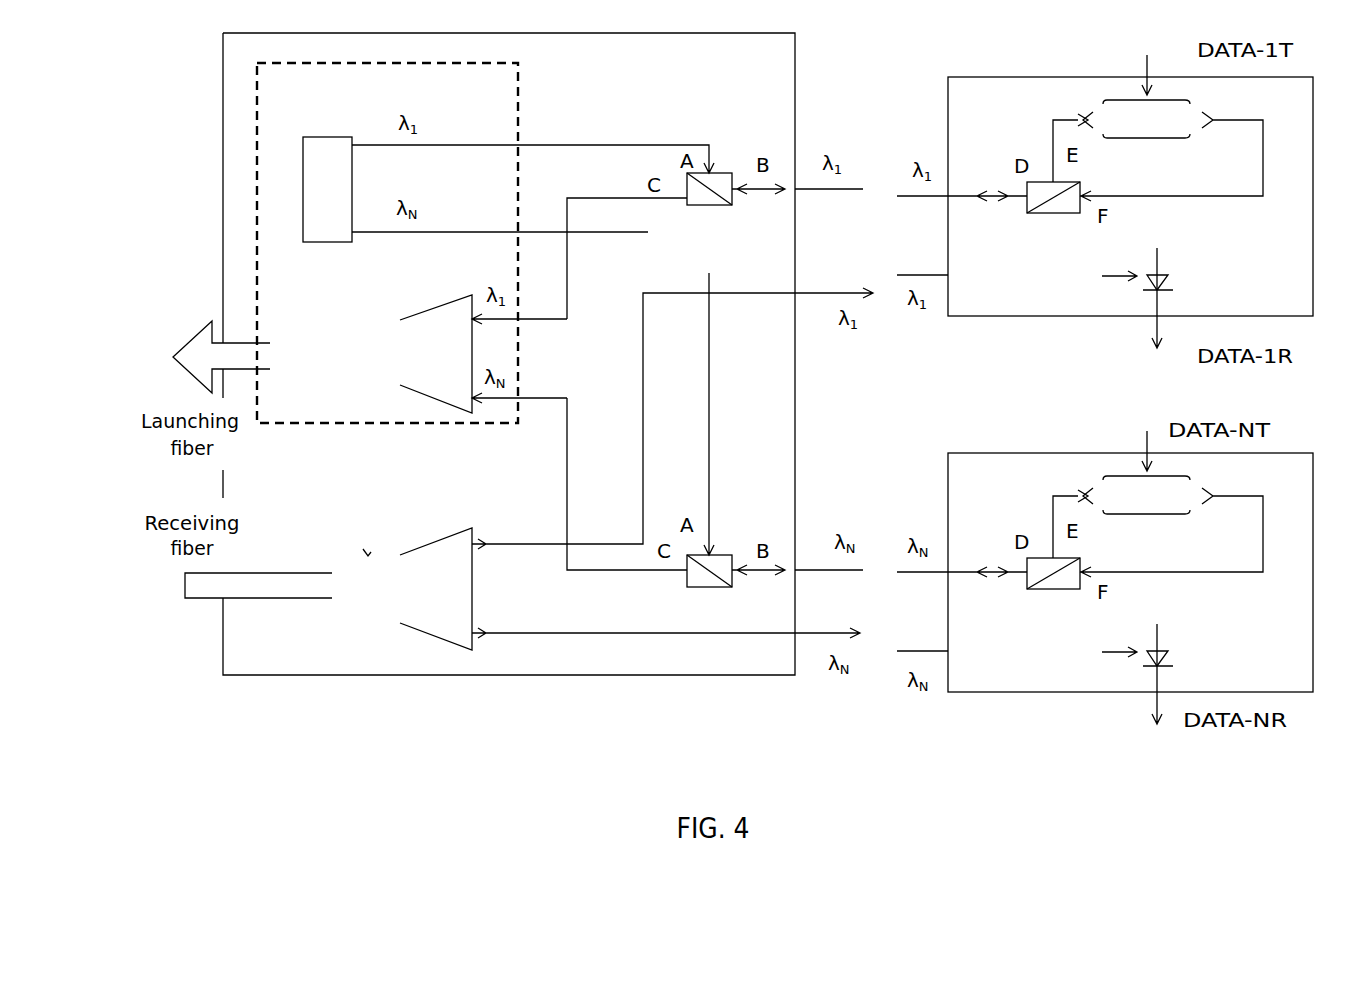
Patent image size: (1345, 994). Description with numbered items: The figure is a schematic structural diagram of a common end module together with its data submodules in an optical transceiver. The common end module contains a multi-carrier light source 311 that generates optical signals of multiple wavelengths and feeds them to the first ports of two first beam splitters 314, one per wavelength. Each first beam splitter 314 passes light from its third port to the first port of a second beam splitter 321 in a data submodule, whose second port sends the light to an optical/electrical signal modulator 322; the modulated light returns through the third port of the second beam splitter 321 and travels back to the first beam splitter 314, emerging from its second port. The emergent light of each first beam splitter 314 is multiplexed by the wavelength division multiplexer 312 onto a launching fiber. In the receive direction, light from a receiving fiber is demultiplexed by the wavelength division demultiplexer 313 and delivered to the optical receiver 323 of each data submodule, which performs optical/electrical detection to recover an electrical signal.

The multi-carrier light source 311 is at (382, 94).
The wavelength division multiplexer 312 is at (434, 303).
The wavelength division demultiplexer 313 is at (460, 534).
The first beam splitter 314 is at (716, 165).
The second beam splitter 321 is at (1079, 182).
The optical/electrical signal modulator 322 is at (1194, 101).
The optical receiver 323 is at (1227, 250).